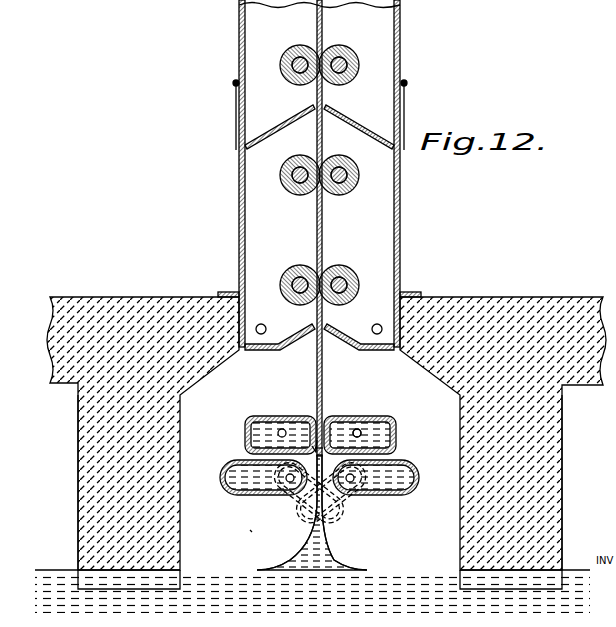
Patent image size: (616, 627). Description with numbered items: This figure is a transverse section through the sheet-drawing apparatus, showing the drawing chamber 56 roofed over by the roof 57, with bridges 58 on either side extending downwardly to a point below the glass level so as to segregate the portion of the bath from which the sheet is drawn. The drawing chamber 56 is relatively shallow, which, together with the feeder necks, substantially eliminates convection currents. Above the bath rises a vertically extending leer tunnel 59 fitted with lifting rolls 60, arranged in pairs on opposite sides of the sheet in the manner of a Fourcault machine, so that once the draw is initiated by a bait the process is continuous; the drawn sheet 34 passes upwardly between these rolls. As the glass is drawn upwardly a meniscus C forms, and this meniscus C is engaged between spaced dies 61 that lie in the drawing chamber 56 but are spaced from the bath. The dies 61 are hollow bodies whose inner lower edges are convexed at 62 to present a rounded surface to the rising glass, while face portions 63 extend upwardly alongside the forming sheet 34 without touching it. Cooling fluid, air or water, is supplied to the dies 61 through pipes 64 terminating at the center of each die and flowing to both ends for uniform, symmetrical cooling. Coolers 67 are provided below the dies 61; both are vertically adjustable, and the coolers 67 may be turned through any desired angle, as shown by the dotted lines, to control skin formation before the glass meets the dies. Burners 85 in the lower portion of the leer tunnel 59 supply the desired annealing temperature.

The blade 34 is at (397, 228).
The drawing chamber 56 is at (224, 516).
The roof 57 is at (56, 348).
The bridges 58 is at (92, 448).
The leer tunnel 59 is at (256, 42).
The lifting rolls 60 is at (341, 52).
The dies 61 is at (245, 428).
The convexed inner lower edges 62 is at (312, 447).
The face portions 63 is at (317, 446).
The pipes 64 is at (359, 432).
The coolers 67 is at (224, 466).
The burners 85 is at (377, 323).
The meniscus C is at (338, 556).